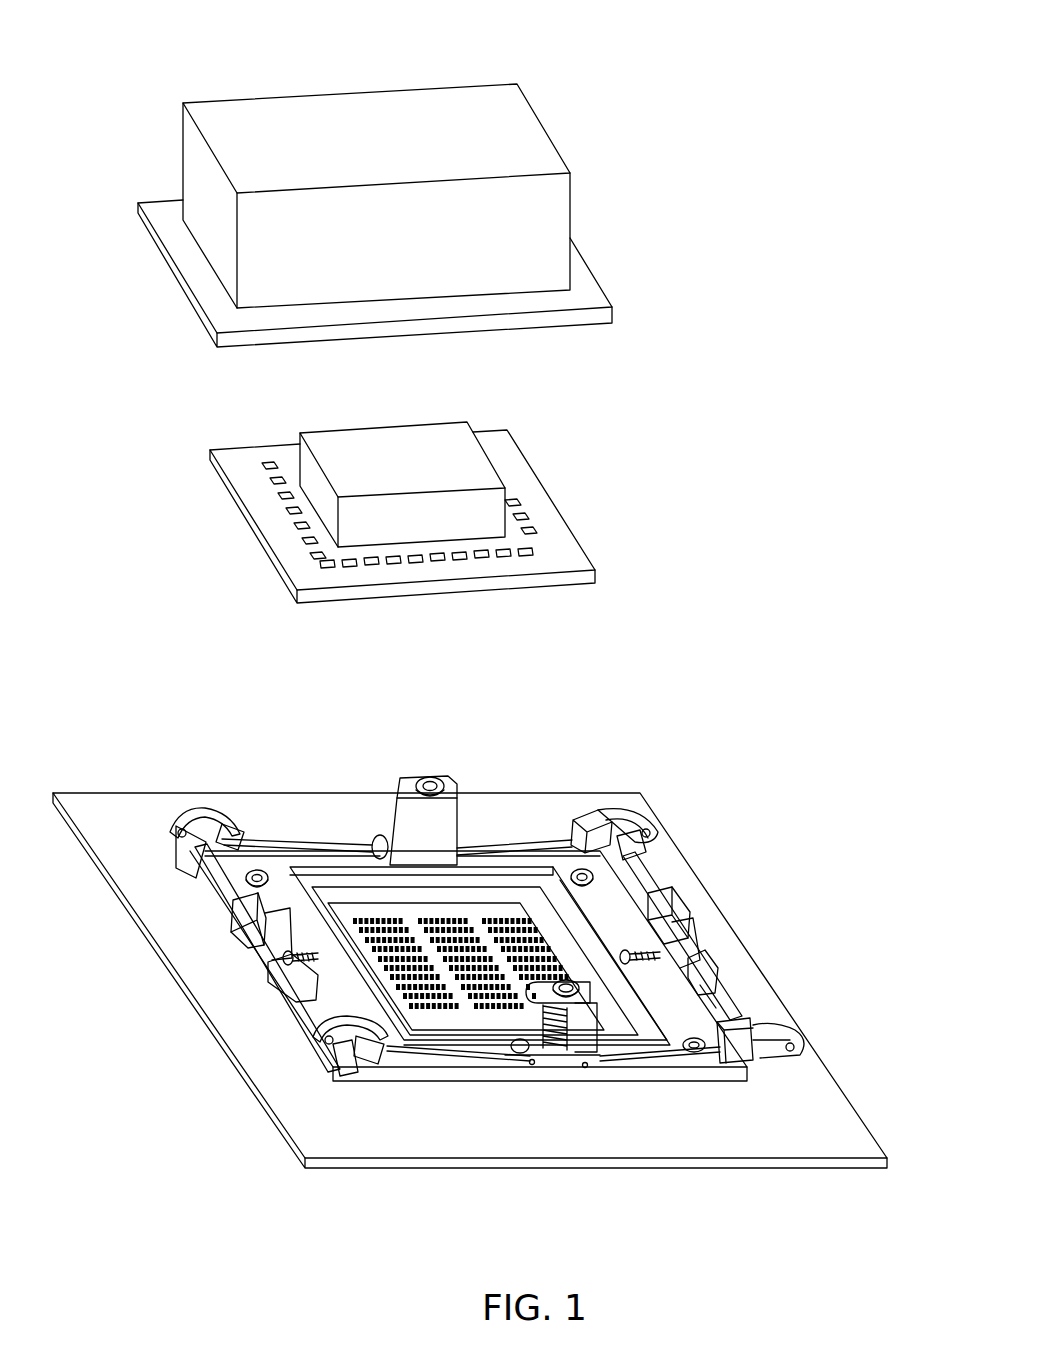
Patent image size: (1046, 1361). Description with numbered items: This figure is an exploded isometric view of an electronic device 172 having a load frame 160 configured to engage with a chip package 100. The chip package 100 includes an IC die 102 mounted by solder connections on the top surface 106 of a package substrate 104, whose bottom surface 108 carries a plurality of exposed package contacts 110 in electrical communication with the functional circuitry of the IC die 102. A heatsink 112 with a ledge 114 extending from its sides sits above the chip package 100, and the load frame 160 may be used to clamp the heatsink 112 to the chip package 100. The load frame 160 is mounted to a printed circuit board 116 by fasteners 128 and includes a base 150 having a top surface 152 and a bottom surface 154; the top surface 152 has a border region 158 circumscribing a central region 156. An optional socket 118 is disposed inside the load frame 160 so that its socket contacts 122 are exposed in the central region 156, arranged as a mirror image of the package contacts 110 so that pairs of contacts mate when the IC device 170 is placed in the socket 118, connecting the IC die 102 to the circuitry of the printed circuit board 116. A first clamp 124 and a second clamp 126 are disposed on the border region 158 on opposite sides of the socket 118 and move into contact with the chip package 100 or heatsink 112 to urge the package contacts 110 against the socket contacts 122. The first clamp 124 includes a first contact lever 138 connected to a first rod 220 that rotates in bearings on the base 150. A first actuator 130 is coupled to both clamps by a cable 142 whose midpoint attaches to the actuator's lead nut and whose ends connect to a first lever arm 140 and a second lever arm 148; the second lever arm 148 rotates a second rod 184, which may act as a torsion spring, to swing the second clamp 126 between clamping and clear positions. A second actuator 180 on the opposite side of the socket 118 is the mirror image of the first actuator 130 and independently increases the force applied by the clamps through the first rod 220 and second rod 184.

The chip package 100 is at (566, 487).
The integrated circuit (IC) die 102 is at (391, 442).
The package substrate 104 is at (550, 533).
The top surface 106 is at (512, 460).
The bottom surface 108 is at (513, 593).
The package contacts 110 is at (430, 562).
The heatsink 112 is at (542, 123).
The ledge 114 is at (580, 288).
The printed circuit board (PCB) 116 is at (822, 1128).
The socket 118 is at (596, 916).
The socket contacts 122 is at (510, 910).
The first clamp 124 is at (713, 908).
The second clamp 126 is at (240, 957).
The fasteners 128 is at (260, 868).
The first actuator 130 is at (592, 1022).
The first contact lever 138 is at (290, 885).
The first lever arm 140 is at (777, 1057).
The cable 142 is at (448, 1055).
The second lever arm 148 is at (352, 1063).
The base 150 is at (688, 1076).
The top surface 152 is at (238, 870).
The bottom surface 154 is at (210, 912).
The central region 156 is at (478, 885).
The border region 158 is at (565, 952).
The load frame 160 is at (728, 950).
The IC device 170 is at (765, 76).
The electronic device 172 is at (205, 70).
The second actuator 180 is at (448, 770).
The second rod 184 is at (317, 960).
The first rod 220 is at (723, 997).